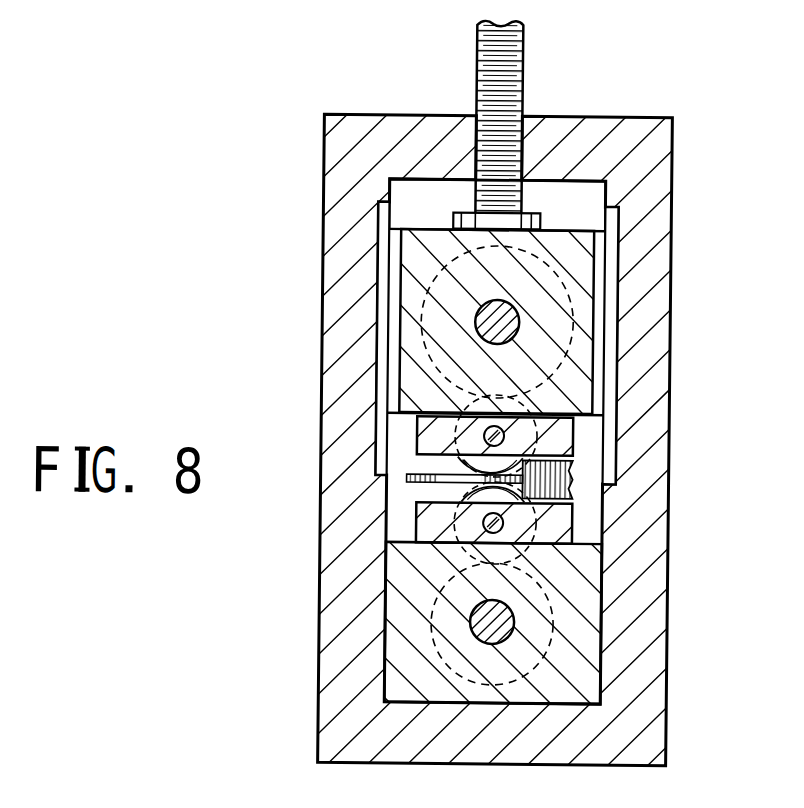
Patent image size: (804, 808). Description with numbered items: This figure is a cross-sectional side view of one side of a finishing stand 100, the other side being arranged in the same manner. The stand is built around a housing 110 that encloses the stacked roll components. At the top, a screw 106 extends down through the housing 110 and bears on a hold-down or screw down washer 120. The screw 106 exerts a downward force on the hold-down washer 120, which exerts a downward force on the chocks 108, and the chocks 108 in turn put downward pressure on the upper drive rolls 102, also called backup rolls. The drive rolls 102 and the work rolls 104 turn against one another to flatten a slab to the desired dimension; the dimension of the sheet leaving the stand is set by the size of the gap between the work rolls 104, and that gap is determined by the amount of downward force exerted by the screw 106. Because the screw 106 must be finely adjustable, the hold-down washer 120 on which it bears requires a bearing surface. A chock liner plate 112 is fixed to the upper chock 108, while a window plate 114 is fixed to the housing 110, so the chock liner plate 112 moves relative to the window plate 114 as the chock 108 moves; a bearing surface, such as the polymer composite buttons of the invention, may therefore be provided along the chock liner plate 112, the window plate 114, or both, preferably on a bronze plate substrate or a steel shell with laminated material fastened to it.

The finishing stand 100 is at (499, 392).
The drive rolls 102 is at (572, 341).
The work rolls 104 is at (537, 437).
The screw 106 is at (508, 60).
The chocks 108 is at (417, 438).
The housing 110 is at (381, 116).
The chock liner plate 112 is at (398, 345).
The window plate 114 is at (374, 270).
The hold-down washer 120 is at (574, 183).